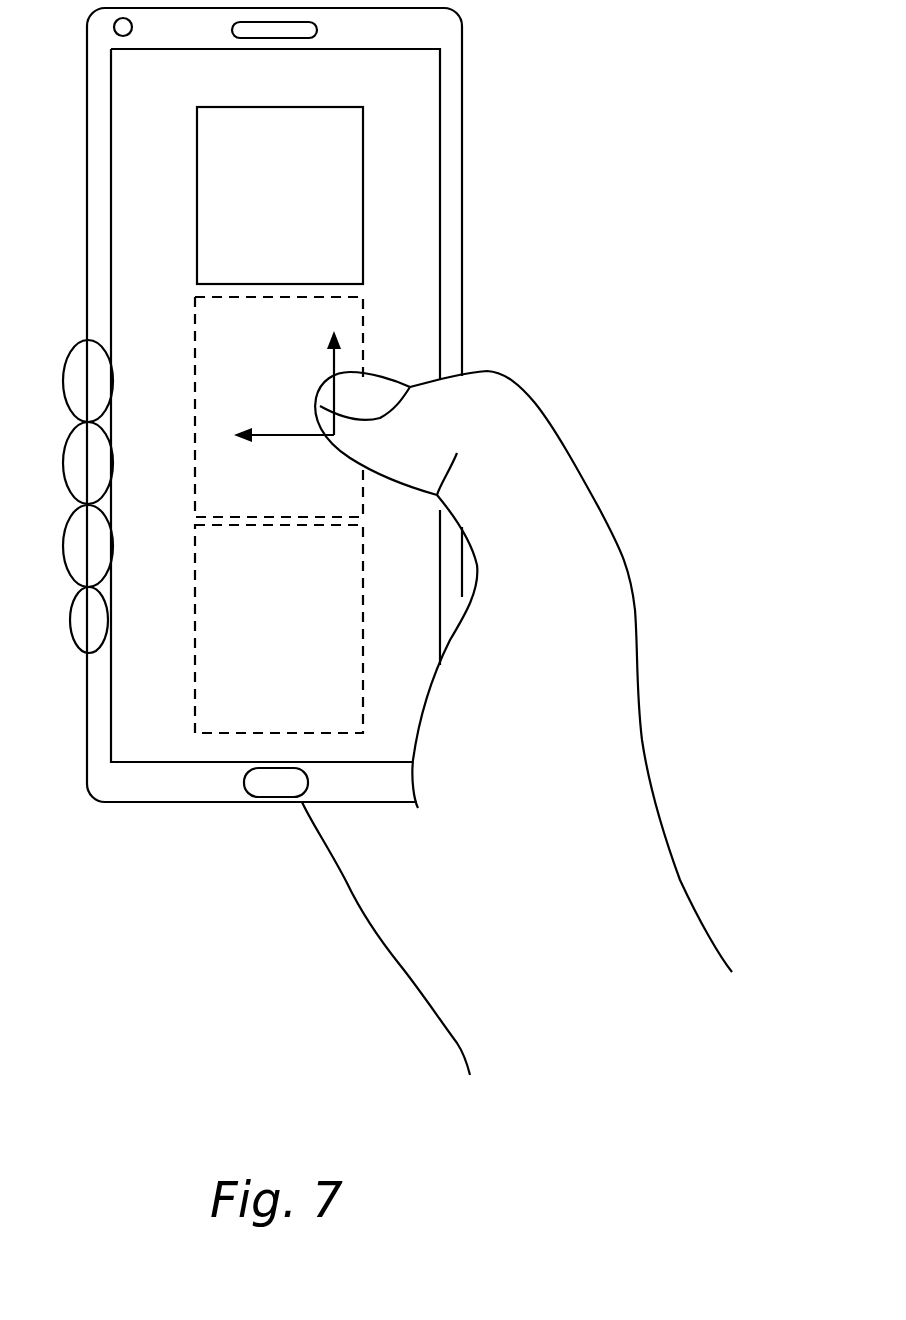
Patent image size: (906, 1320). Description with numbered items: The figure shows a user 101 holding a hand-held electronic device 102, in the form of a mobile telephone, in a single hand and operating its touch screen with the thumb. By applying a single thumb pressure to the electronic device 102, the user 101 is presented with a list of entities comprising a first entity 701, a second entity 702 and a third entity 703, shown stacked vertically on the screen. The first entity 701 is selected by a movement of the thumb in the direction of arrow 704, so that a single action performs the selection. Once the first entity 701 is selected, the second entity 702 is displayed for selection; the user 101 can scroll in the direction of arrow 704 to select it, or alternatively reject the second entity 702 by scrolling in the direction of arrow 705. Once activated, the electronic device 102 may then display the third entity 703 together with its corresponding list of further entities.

The user 101 is at (640, 797).
The electronic device 102 is at (452, 63).
The first entity 701 is at (352, 198).
The second entity 702 is at (210, 433).
The third entity 703 is at (210, 650).
The arrow 704 is at (335, 357).
The arrow 705 is at (287, 436).